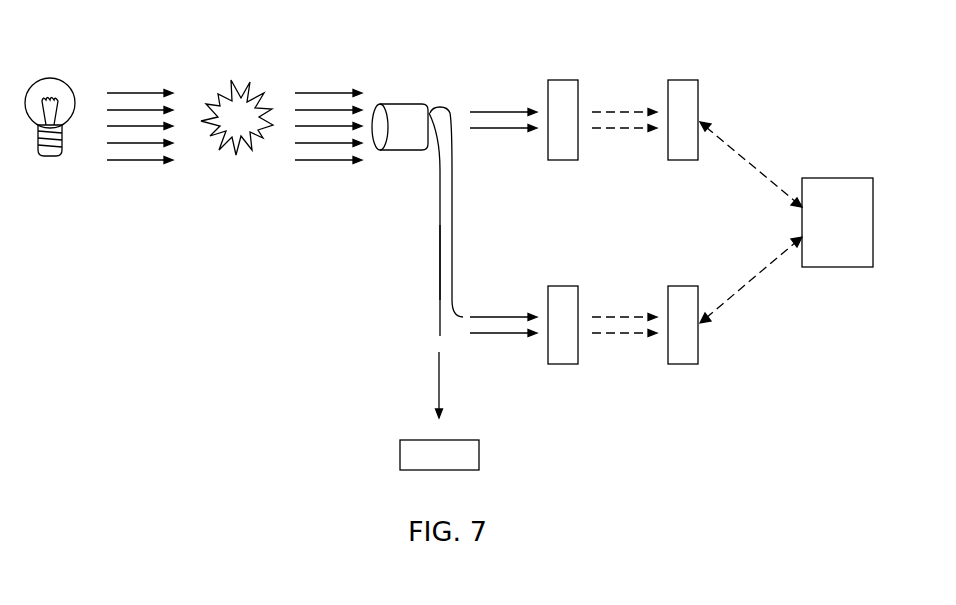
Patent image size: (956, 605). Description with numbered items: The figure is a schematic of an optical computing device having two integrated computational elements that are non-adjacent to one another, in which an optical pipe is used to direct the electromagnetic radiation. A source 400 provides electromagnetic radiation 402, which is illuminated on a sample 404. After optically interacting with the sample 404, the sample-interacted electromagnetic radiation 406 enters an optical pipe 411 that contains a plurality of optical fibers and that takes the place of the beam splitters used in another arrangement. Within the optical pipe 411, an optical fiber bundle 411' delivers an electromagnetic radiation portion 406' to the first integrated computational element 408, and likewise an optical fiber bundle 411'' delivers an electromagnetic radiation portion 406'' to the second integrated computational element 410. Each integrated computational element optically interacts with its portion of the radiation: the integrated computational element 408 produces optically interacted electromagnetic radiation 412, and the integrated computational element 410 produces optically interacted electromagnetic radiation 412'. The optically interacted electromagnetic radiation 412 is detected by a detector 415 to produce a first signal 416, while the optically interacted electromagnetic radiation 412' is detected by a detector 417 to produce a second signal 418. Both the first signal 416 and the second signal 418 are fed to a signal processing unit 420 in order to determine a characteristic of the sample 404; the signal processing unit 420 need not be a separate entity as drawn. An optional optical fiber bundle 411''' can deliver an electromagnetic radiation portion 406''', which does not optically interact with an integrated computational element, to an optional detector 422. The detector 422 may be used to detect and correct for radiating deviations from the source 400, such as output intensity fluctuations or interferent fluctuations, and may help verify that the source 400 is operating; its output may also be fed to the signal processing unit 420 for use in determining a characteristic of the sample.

The source 400 is at (48, 79).
The electromagnetic radiation 402 is at (130, 92).
The sample 404 is at (222, 86).
The sample-interacted electromagnetic radiation 406 is at (328, 96).
The optical pipe 411 is at (400, 103).
The optical fiber bundle 411' is at (436, 99).
The optical fiber bundle 411'' is at (480, 224).
The optional optical fiber bundle 411''' is at (400, 262).
The electromagnetic radiation portion 406' is at (503, 89).
The integrated computational element 408 is at (563, 85).
The optically interacted electromagnetic radiation 412 is at (628, 89).
The detector 415 is at (683, 85).
The first signal 416 is at (738, 153).
The signal processing unit 420 is at (821, 233).
The integrated computational element 410 is at (562, 290).
The electromagnetic radiation portion 406'' is at (503, 295).
The optically interacted electromagnetic radiation 412' is at (629, 295).
The detector 417 is at (683, 290).
The second signal 418 is at (738, 292).
The electromagnetic radiation portion 406''' is at (480, 385).
The detector 422 is at (480, 455).